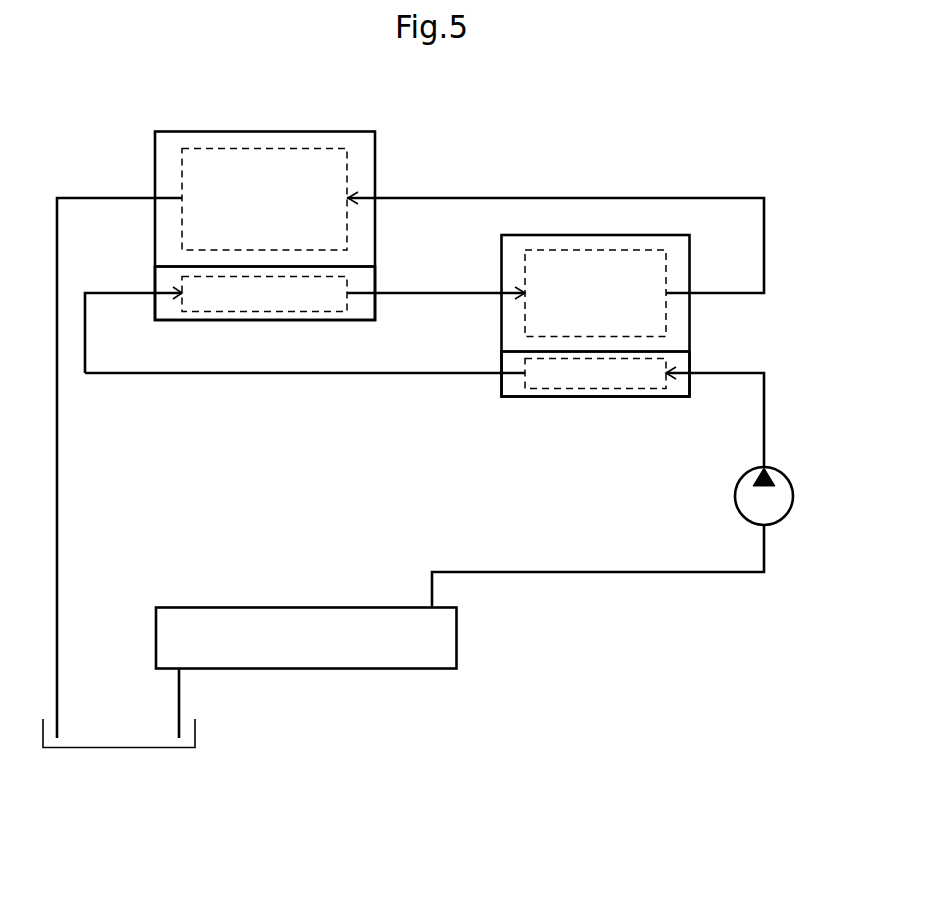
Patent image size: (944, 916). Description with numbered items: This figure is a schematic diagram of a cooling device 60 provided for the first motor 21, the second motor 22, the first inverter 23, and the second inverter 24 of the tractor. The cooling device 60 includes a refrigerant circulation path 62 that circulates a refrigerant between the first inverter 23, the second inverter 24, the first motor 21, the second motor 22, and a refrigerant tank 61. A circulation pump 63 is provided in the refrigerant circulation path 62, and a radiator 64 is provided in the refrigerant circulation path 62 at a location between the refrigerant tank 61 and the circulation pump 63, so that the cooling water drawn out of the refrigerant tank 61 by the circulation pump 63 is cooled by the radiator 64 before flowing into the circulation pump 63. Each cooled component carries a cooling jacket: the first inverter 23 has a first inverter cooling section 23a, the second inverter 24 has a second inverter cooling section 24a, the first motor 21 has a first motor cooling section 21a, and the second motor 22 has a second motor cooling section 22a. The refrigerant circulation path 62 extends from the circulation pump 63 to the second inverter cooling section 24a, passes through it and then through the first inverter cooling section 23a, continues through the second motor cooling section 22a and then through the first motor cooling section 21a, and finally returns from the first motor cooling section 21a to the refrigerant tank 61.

The first motor 21 is at (197, 131).
The first motor cooling section 21a is at (313, 147).
The second motor 22 is at (500, 267).
The second motor cooling section 22a is at (667, 263).
The first inverter 23 is at (190, 320).
The first inverter cooling section 23a is at (312, 312).
The second inverter 24 is at (546, 397).
The second inverter cooling section 24a is at (618, 388).
The cooling device 60 is at (664, 620).
The refrigerant tank 61 is at (120, 748).
The refrigerant circulation path 62 is at (273, 375).
The circulation pump 63 is at (793, 487).
The radiator 64 is at (300, 607).